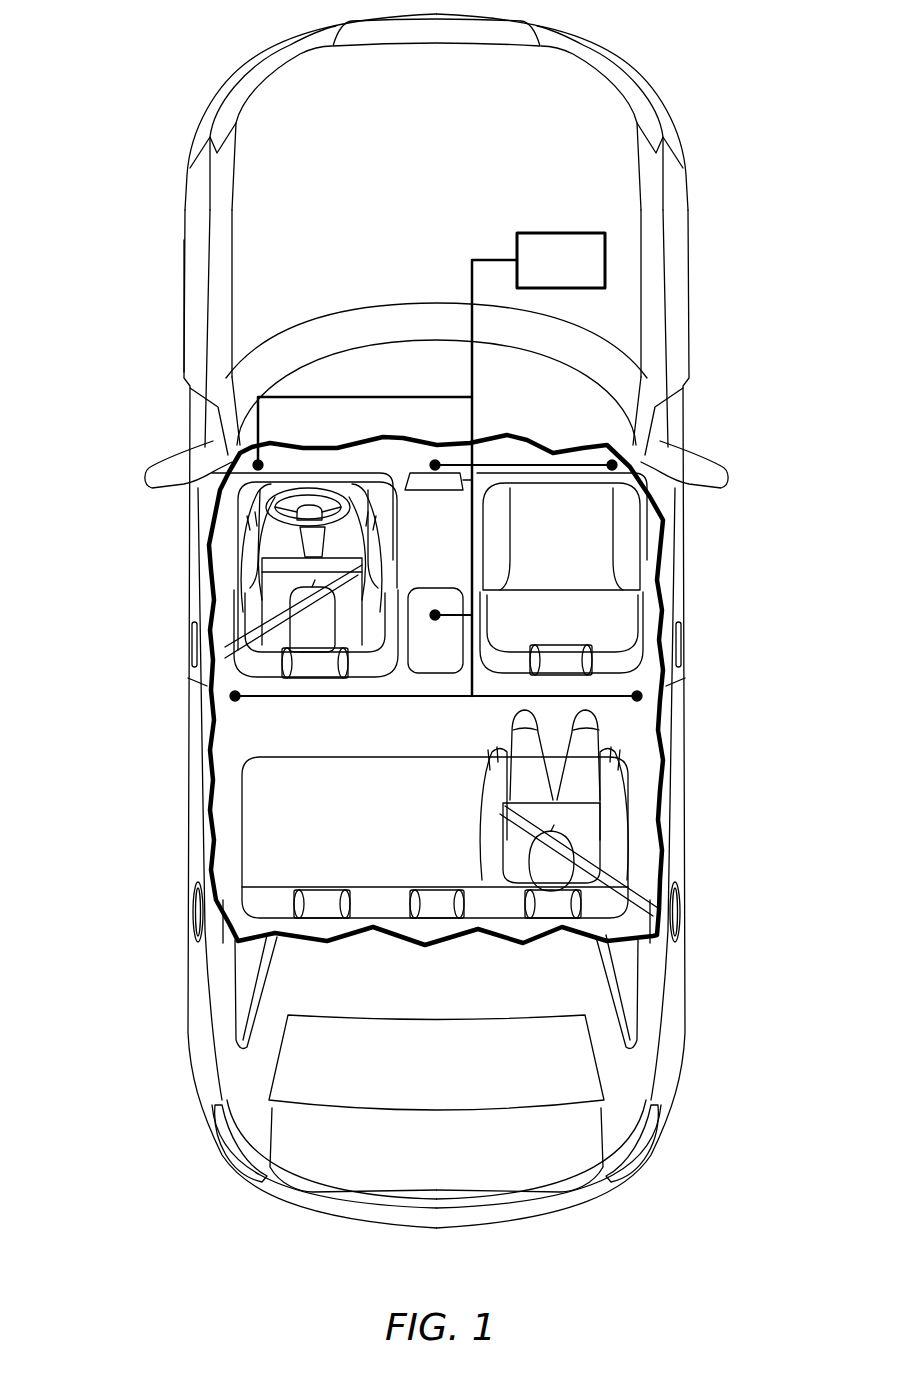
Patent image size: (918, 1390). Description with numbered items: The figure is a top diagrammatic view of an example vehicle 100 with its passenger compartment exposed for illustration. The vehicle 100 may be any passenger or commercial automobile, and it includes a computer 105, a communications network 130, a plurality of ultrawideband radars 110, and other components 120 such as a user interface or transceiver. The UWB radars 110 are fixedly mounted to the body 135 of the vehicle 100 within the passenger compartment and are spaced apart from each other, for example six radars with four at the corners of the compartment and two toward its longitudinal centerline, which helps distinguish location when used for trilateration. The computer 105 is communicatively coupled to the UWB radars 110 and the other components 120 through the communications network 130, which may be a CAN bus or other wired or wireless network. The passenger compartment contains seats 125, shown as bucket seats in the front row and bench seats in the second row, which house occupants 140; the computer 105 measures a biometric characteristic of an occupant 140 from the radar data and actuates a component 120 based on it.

The vehicle 100 is at (722, 62).
The computer 105 is at (606, 248).
The ultrawideband (UWB) radars 110 is at (433, 612).
The component 120 is at (430, 482).
The seats 125 is at (613, 622).
The communications network 130 is at (470, 280).
The body 135 is at (182, 243).
The occupant 140 is at (253, 605).